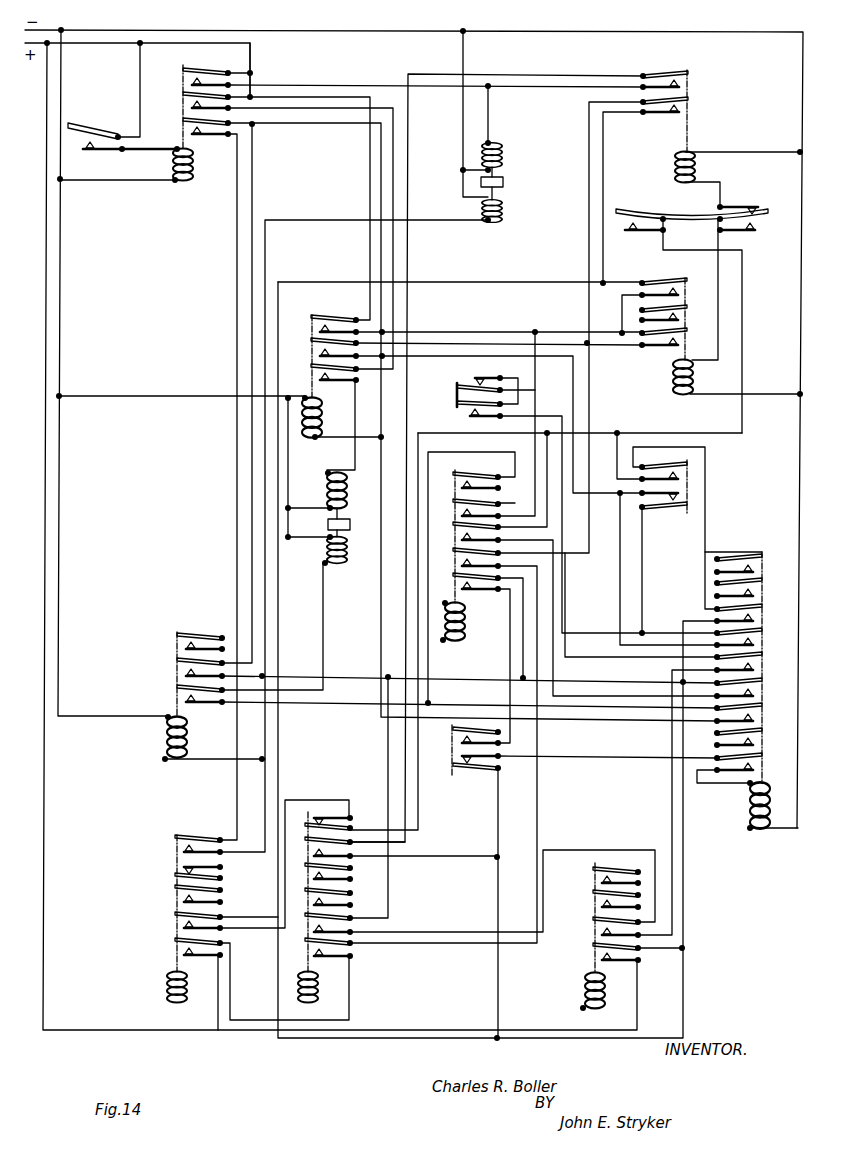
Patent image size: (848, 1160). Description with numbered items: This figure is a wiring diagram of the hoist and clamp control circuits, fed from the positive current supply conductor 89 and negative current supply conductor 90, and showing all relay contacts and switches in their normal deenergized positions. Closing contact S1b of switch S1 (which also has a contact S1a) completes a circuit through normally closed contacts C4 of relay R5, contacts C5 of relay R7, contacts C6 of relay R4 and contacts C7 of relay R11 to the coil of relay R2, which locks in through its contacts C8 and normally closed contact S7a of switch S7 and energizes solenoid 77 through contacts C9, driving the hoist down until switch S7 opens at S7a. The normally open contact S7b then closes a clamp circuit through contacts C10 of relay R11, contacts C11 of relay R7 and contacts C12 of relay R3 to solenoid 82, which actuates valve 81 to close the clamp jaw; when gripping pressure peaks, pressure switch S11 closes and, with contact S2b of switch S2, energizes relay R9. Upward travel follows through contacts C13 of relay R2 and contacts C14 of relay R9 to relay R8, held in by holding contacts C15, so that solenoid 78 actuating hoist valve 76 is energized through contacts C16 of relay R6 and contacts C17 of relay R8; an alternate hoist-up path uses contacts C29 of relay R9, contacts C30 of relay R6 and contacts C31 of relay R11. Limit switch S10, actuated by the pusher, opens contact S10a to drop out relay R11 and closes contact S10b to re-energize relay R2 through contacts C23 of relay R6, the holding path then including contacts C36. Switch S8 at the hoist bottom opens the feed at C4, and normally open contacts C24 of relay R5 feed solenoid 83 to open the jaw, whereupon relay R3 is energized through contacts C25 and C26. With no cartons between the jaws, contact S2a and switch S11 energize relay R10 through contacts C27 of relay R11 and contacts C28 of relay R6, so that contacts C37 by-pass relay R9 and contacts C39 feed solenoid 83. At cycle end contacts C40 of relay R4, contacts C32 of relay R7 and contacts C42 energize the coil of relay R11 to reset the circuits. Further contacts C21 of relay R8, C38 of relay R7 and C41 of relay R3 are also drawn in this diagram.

The negative current supply conductor 90 is at (327, 34).
The positive current supply conductor 89 is at (58, 283).
The switch S8 is at (95, 127).
The normally open contacts of relay R5 C24 is at (182, 69).
The normally closed contacts of relay R5 C4 is at (182, 96).
The contacts of relay R5 C25 is at (182, 124).
The relay R5 is at (190, 178).
The solenoid 83 is at (504, 150).
The valve 81 is at (508, 182).
The solenoid 82 is at (505, 212).
The contacts of relay R10 C39 is at (690, 80).
The contacts of relay R10 C37 is at (690, 106).
The relay R10 is at (672, 168).
The contact of switch S2 S2a is at (742, 203).
The switch S2 is at (762, 220).
The contact of switch S2 S2b is at (742, 232).
The pressure actuated switch S11 is at (628, 224).
The contacts of relay R9 C14 is at (672, 285).
The contacts of relay R9 C29 is at (672, 345).
The relay R9 is at (672, 382).
The contacts of relay R2 C13 is at (330, 318).
The contacts of relay R2 C8 is at (311, 345).
The contacts of relay R2 C9 is at (311, 371).
The relay R2 is at (322, 409).
The solenoid 77 is at (348, 490).
The hoist valve 76 is at (352, 524).
The solenoid 78 is at (343, 557).
The contact of switch S1 S1a is at (478, 378).
The switch S1 is at (470, 390).
The contact of switch S1 S1b is at (470, 416).
The switch S7 is at (700, 464).
The normally open contact of switch S7 S7b is at (672, 480).
The normally closed contact of switch S7 S7a is at (672, 495).
The contacts of relay R6 C16 is at (455, 498).
The contacts of relay R6 C28 is at (480, 534).
The contacts of relay R6 C30 is at (460, 555).
The contacts of relay R6 C23 is at (470, 590).
The relay R6 is at (465, 626).
The contacts of relay R11 C10 is at (740, 614).
The contacts of relay R11 C36 is at (745, 636).
The contacts of relay R11 C7 is at (750, 662).
The contacts of relay R11 C27 is at (740, 688).
The contacts of relay R11 C31 is at (745, 712).
The contacts of relay R11 C42 is at (742, 768).
The relay R11 is at (752, 800).
The contacts of relay R8 C21 is at (172, 638).
The holding contacts of relay R8 C15 is at (170, 663).
The contacts of relay R8 C17 is at (170, 689).
The relay R8 is at (168, 739).
The contact of switch S10 S10b is at (463, 741).
The contact of switch S10 S10a is at (507, 756).
The limit switch S10 is at (452, 768).
The contacts of relay R7 C11 is at (348, 822).
The contacts of relay R7 C38 is at (330, 870).
The contacts of relay R7 C5 is at (350, 928).
The contacts of relay R7 C32 is at (318, 949).
The relay R7 is at (298, 985).
The contacts of relay R3 C26 is at (170, 842).
The contacts of relay R3 C12 is at (170, 918).
The contacts of relay R3 C41 is at (170, 945).
The relay R3 is at (168, 985).
The contacts of relay R4 C6 is at (605, 925).
The contacts of relay R4 C40 is at (605, 948).
The relay R4 is at (590, 984).